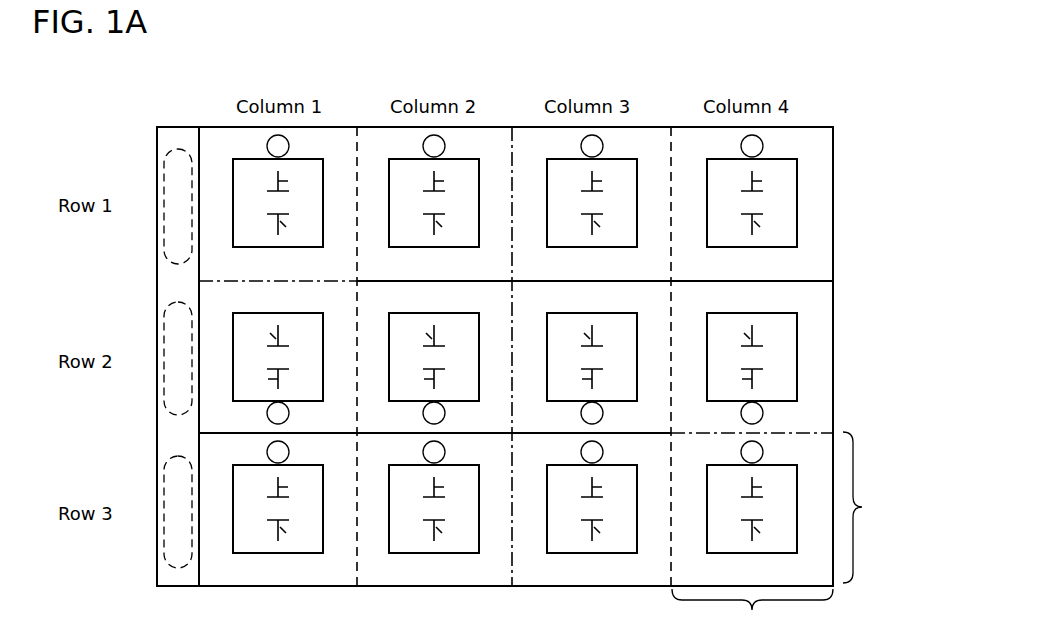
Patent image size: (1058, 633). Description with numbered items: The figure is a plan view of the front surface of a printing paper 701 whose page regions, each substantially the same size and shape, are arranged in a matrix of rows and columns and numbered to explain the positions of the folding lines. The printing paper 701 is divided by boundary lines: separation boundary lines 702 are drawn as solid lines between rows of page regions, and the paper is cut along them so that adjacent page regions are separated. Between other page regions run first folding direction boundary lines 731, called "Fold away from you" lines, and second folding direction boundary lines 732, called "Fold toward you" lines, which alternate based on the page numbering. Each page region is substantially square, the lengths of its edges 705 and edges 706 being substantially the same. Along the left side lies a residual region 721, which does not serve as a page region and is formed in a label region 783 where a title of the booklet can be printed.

The printing paper 701 is at (815, 110).
The separation boundary lines 702 is at (199, 155).
The residual region 721 is at (174, 137).
The label region 783 is at (172, 165).
The second folding direction boundary lines 732 is at (222, 282).
The first folding direction boundary lines 731 is at (357, 562).
The edges 705 is at (877, 507).
The edges 706 is at (752, 611).